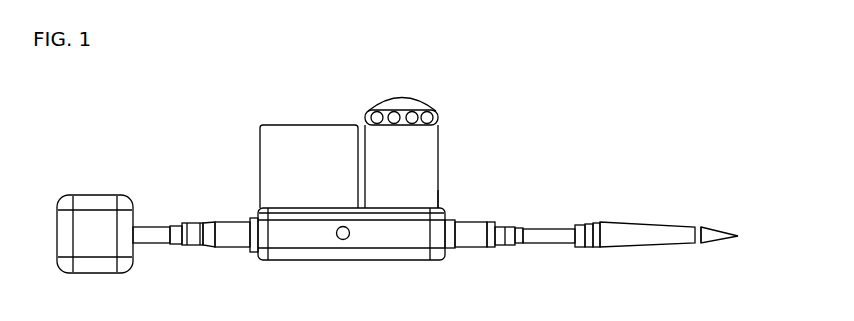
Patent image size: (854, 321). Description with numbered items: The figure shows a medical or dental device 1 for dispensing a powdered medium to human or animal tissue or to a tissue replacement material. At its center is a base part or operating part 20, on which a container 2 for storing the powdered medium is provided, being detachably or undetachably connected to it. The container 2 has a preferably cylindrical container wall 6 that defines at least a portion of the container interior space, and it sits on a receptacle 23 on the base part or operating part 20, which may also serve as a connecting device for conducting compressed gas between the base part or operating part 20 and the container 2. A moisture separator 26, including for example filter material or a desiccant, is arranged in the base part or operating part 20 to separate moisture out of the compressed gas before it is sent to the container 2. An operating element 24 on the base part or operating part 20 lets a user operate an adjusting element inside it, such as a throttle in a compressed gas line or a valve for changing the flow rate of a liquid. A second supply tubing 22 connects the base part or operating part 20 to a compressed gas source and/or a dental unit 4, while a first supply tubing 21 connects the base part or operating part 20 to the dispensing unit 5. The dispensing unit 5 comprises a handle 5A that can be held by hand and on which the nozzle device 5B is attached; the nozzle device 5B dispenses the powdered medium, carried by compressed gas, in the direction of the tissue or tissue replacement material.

The medical or dental device 1 is at (568, 85).
The container 2 is at (433, 90).
The dental unit 4 is at (104, 251).
The dispensing unit 5 is at (660, 210).
The handle 5A is at (635, 242).
The nozzle device 5B is at (733, 235).
The container wall 6 is at (439, 143).
The base part or operating part 20 is at (419, 264).
The first supply tubing 21 is at (547, 237).
The second supply tubing 22 is at (230, 240).
The receptacle 23 is at (439, 198).
The operating element 24 is at (349, 240).
The moisture separator 26 is at (324, 186).